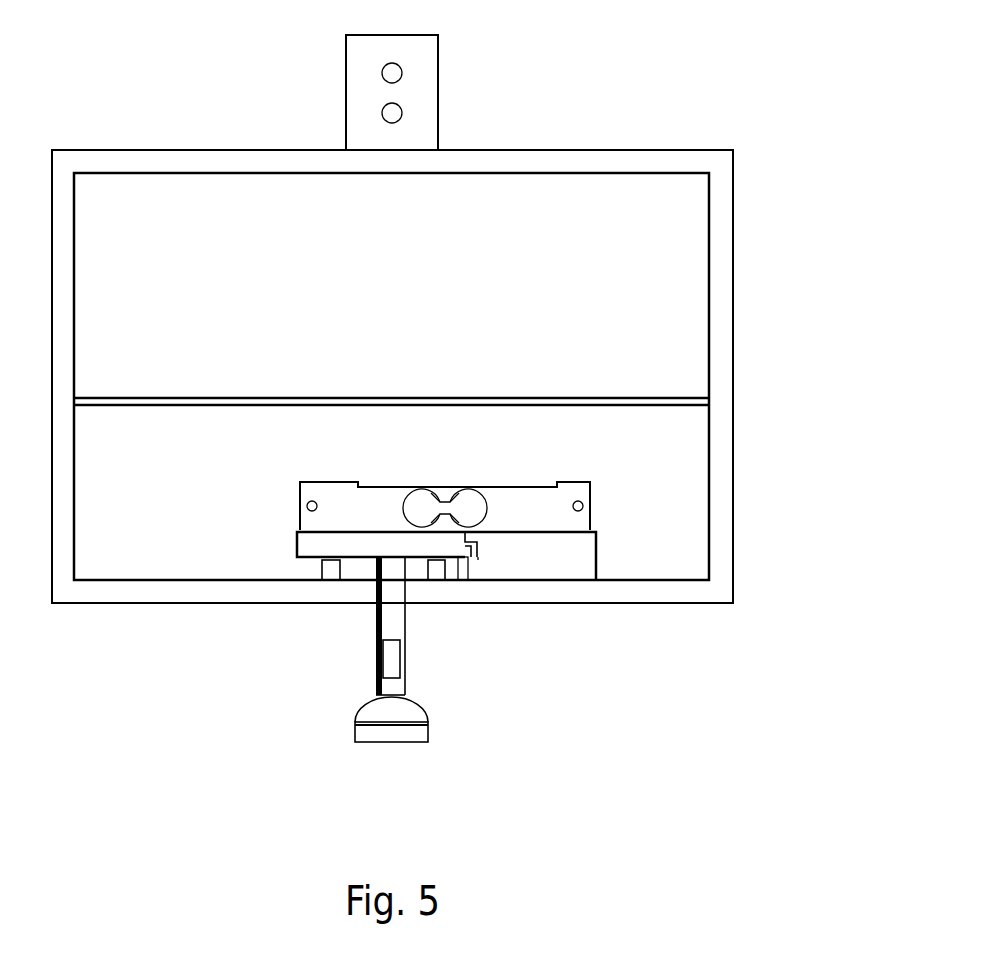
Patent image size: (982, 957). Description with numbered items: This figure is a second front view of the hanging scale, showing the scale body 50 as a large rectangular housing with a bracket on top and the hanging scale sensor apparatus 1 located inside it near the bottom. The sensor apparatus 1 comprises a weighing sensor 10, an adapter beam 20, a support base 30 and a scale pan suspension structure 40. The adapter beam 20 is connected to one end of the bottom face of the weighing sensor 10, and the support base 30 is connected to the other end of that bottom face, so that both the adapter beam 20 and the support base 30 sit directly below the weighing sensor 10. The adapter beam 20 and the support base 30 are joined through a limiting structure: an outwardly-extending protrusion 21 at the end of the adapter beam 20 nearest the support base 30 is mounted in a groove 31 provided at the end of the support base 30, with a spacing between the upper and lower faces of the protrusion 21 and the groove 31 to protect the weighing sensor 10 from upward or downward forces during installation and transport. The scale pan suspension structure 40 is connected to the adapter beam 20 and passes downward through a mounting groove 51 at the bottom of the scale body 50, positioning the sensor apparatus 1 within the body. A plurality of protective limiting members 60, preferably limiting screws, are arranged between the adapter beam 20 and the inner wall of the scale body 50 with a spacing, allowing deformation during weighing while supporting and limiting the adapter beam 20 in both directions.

The hanging scale sensor apparatus 1 is at (435, 388).
The weighing sensor 10 is at (335, 520).
The adapter beam 20 is at (363, 547).
The outwardly-extending protrusion 21 is at (466, 560).
The support base 30 is at (558, 568).
The groove 31 is at (482, 560).
The scale pan suspension structure 40 is at (393, 628).
The scale body 50 is at (720, 307).
The mounting groove 51 is at (372, 608).
The protective limiting members 60 is at (325, 572).